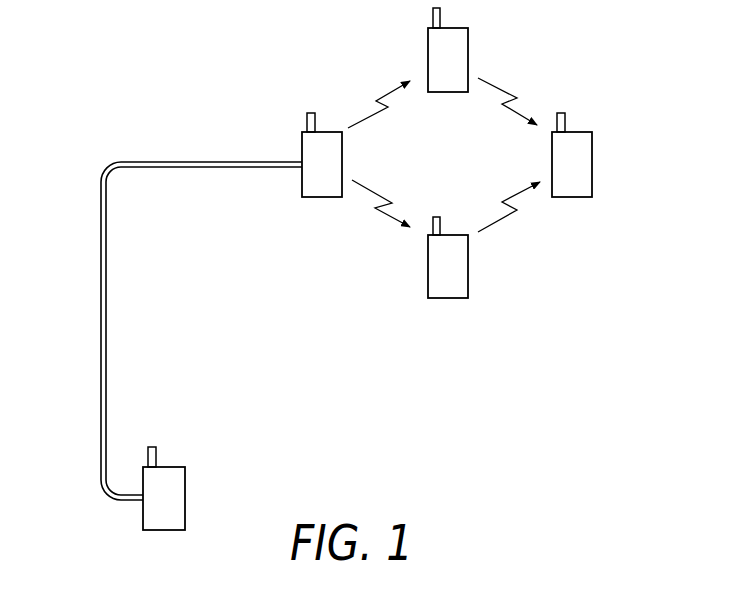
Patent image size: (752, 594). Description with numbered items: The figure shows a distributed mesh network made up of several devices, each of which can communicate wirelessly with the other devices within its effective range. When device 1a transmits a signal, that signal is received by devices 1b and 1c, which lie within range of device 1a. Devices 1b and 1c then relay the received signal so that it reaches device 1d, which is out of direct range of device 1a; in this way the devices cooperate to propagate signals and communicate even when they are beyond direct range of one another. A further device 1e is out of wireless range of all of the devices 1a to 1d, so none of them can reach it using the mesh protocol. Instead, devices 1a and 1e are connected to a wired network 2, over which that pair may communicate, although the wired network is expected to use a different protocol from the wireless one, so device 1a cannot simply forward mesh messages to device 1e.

The device 1a is at (320, 197).
The device 1b is at (468, 42).
The device 1c is at (468, 285).
The device 1d is at (592, 148).
The further device 1e is at (185, 480).
The wired network 2 is at (100, 303).